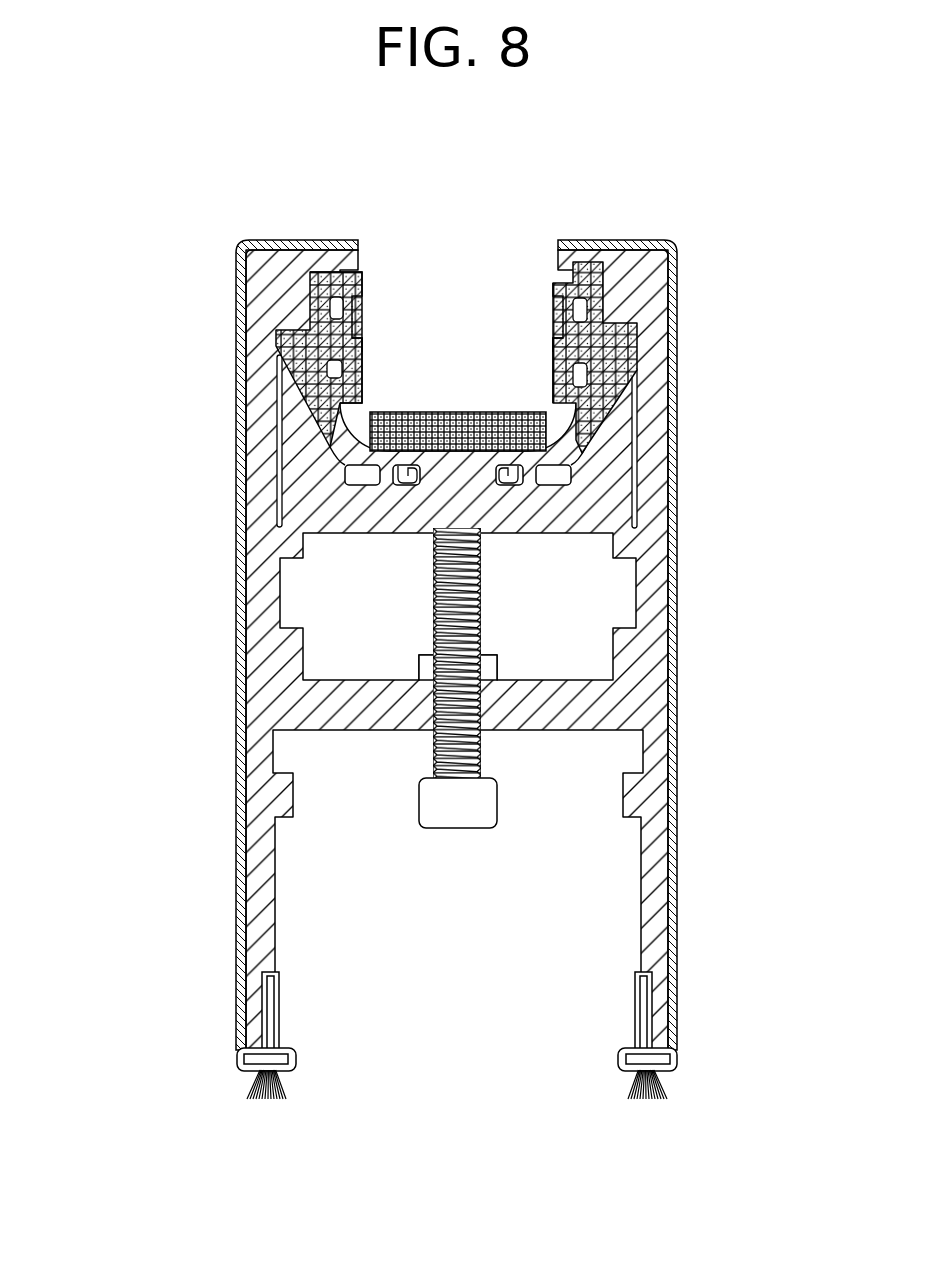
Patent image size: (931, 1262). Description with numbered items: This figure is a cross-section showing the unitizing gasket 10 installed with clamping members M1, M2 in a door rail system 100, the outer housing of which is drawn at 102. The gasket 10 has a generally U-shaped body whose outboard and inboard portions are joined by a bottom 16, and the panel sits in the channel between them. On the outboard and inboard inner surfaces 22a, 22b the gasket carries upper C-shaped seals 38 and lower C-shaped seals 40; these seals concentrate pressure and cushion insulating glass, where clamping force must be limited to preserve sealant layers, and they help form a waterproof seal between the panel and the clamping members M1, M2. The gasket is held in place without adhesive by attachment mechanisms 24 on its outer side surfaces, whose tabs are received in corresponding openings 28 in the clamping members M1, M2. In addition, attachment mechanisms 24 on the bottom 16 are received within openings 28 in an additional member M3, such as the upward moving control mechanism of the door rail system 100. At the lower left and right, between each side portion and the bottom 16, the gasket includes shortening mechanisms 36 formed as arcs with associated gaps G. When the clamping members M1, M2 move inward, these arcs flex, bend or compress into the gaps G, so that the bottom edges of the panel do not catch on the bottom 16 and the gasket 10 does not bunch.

The gasket 10 is at (307, 358).
The bottom 16 is at (463, 463).
The inner surface of outboard portion 22a is at (353, 391).
The inner surface of inboard portion 22b is at (562, 390).
The attachment mechanism 24 is at (517, 480).
The opening 28 is at (503, 480).
The shortening mechanism 36 is at (366, 462).
The upper C-shaped seal 38 is at (360, 295).
The lower C-shaped seal 40 is at (363, 357).
The door rail system 100 is at (210, 693).
The outer skin 102 is at (236, 565).
The gap G is at (365, 478).
The clamping member M1 is at (360, 368).
The clamping member M2 is at (607, 350).
The additional member M3 is at (603, 453).